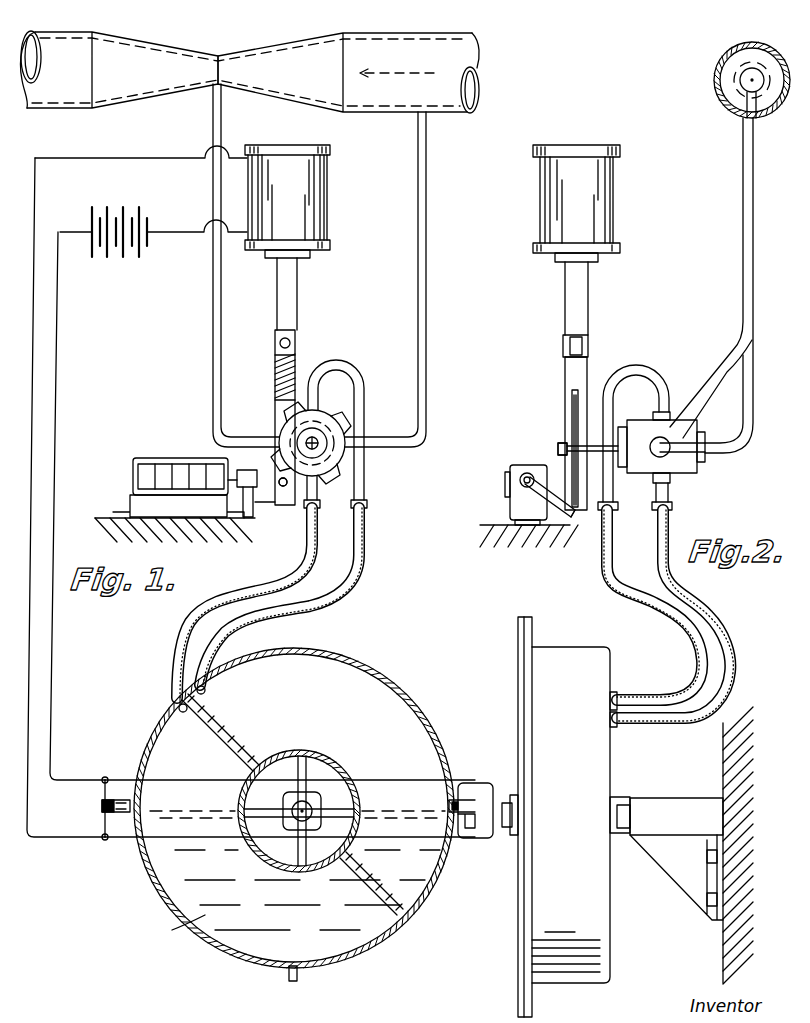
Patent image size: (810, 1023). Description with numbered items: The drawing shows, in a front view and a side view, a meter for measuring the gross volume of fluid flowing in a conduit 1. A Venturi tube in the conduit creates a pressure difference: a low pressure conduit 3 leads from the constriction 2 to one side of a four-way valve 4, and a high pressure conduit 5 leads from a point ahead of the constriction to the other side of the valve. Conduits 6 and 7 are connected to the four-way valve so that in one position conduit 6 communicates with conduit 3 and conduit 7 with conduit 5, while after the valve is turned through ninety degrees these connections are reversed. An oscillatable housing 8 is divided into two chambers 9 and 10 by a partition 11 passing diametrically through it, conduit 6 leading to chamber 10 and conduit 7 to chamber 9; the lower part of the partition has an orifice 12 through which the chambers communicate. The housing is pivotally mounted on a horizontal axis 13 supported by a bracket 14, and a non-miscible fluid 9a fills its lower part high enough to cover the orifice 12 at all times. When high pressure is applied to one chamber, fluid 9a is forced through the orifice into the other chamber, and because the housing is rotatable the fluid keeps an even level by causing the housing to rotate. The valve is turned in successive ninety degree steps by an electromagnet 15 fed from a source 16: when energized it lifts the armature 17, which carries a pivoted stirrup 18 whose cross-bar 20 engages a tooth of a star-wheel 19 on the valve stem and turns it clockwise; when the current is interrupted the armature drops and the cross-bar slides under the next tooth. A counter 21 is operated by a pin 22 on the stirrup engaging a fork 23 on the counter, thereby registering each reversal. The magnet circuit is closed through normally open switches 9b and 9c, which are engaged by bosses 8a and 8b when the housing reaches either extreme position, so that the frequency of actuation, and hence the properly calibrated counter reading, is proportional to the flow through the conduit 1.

In FIG. 1, the conduit 1 is at (450, 53).
In FIG. 2, the conduit 1 is at (740, 42).
In FIG. 1, the constriction 2 is at (220, 55).
In FIG. 1, the low pressure conduit 3 is at (213, 298).
In FIG. 2, the low pressure conduit 3 is at (722, 362).
In FIG. 1, the four-way valve 4 is at (340, 425).
In FIG. 2, the four-way valve 4 is at (697, 460).
In FIG. 1, the high pressure conduit 5 is at (426, 235).
In FIG. 2, the high pressure conduit 5 is at (754, 398).
In FIG. 1, the conduit 6 is at (318, 545).
In FIG. 2, the conduit 6 is at (673, 533).
In FIG. 1, the conduit 7 is at (366, 545).
In FIG. 2, the conduit 7 is at (613, 560).
In FIG. 1, the oscillatable housing 8 is at (365, 652).
In FIG. 2, the oscillatable housing 8 is at (590, 772).
In FIG. 1, the boss 8a is at (470, 828).
In FIG. 1, the boss 8b is at (289, 978).
In FIG. 1, the chamber 9 is at (312, 675).
In FIG. 1, the non-miscible fluid 9a is at (174, 930).
In FIG. 1, the switch 9b is at (470, 800).
In FIG. 1, the switch 9c is at (102, 806).
In FIG. 1, the chamber 10 is at (198, 773).
In FIG. 1, the partition 11 is at (240, 748).
In FIG. 1, the orifice 12 is at (380, 915).
In FIG. 2, the horizontal axis 13 is at (640, 795).
In FIG. 2, the bracket 14 is at (688, 855).
In FIG. 1, the electromagnet 15 is at (312, 210).
In FIG. 2, the electromagnet 15 is at (612, 210).
In FIG. 1, the source 16 is at (135, 258).
In FIG. 1, the armature 17 is at (297, 290).
In FIG. 2, the armature 17 is at (588, 288).
In FIG. 1, the stirrup 18 is at (275, 405).
In FIG. 2, the stirrup 18 is at (572, 411).
In FIG. 1, the star-wheel 19 is at (328, 406).
In FIG. 2, the star-wheel 19 is at (572, 397).
In FIG. 1, the cross-bar 20 is at (283, 490).
In FIG. 2, the cross-bar 20 is at (563, 472).
In FIG. 1, the counter 21 is at (160, 458).
In FIG. 2, the counter 21 is at (508, 503).
In FIG. 1, the pin 22 is at (243, 517).
In FIG. 1, the fork 23 is at (255, 517).
In FIG. 2, the fork 23 is at (527, 525).